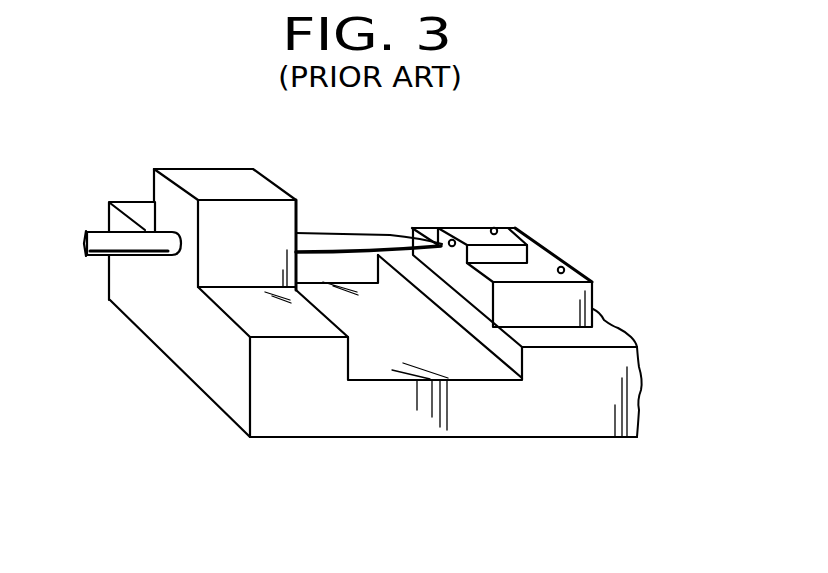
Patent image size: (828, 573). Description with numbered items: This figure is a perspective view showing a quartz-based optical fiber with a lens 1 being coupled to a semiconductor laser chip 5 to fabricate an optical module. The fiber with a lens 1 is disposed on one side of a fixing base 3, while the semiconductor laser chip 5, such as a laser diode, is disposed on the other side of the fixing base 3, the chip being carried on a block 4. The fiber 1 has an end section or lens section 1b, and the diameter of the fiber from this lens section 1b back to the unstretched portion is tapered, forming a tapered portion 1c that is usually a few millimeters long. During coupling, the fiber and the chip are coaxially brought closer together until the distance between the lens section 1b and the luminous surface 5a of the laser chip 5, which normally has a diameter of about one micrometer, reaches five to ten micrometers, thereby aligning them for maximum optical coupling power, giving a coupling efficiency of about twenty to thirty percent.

The quartz-based optical fiber with a lens 1 is at (313, 237).
The end section (lens section) 1b is at (435, 240).
The tapered portion 1c is at (387, 237).
The fixing base 3 is at (300, 408).
The support block 4 is at (563, 307).
The semiconductor laser chip 5 is at (637, 228).
The luminous surface 5a is at (455, 238).